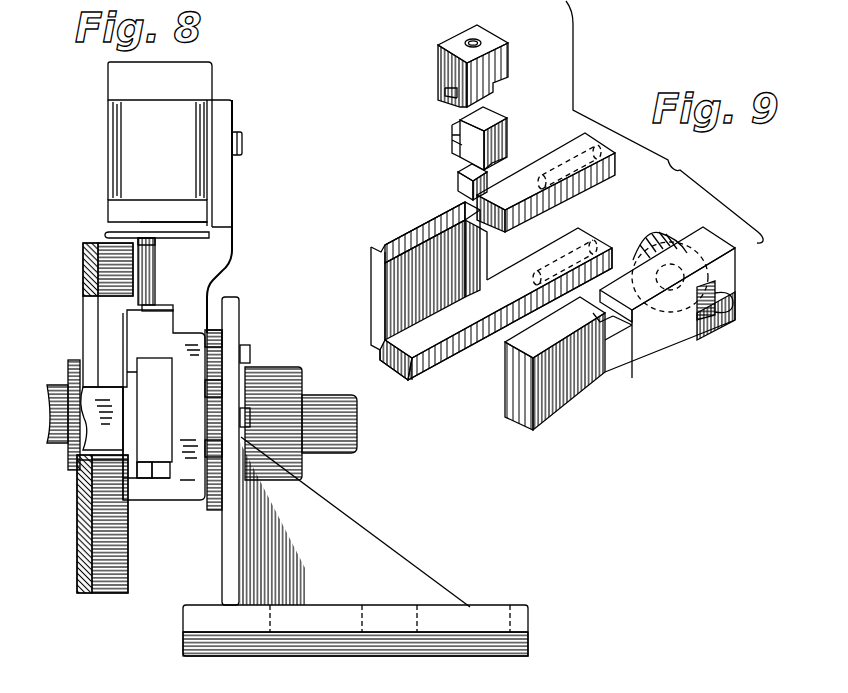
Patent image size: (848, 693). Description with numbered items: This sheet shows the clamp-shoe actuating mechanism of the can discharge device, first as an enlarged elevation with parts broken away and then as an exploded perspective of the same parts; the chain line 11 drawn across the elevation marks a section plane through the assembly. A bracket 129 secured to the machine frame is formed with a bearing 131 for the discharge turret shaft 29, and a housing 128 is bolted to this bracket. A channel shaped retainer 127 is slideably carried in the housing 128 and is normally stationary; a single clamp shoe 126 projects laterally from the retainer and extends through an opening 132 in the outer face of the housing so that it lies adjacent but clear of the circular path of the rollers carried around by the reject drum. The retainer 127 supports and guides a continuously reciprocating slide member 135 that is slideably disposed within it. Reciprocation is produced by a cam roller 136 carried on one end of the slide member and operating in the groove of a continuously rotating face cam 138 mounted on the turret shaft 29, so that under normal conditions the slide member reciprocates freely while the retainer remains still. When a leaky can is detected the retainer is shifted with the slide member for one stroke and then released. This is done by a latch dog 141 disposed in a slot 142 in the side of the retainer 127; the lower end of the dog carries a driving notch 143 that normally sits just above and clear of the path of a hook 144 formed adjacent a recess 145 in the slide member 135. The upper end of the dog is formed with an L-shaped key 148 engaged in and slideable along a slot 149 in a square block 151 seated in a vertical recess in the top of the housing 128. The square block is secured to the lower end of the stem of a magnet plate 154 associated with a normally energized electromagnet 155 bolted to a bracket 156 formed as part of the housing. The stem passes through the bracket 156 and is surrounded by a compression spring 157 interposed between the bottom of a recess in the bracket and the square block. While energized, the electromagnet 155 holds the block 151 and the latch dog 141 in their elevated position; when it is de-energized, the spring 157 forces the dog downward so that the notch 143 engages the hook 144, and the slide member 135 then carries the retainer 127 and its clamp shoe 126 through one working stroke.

In FIG. 8, the section line 11- 11 is at (157, 228).
In FIG. 8, the electromagnet 155 is at (175, 144).
In FIG. 8, the magnet plate 154 is at (108, 235).
In FIG. 8, the bracket 156 is at (222, 256).
In FIG. 8, the compression spring 157 is at (157, 304).
In FIG. 8, the slide member 135 is at (160, 394).
In FIG. 9, the slide member 135 is at (578, 398).
In FIG. 8, the channel shaped retainer 127 is at (163, 466).
In FIG. 9, the channel shaped retainer 127 is at (458, 345).
In FIG. 8, the housing 128 is at (155, 490).
In FIG. 8, the face cam 138 is at (115, 590).
In FIG. 8, the clamp shoe 126 is at (90, 356).
In FIG. 9, the clamp shoe 126 is at (468, 183).
In FIG. 8, the opening 132 is at (116, 467).
In FIG. 8, the bracket 129 is at (368, 554).
In FIG. 8, the bearing 131 is at (290, 368).
In FIG. 8, the discharge turret shaft 29 is at (347, 435).
In FIG. 9, the square block 151 is at (497, 67).
In FIG. 9, the slot 149 is at (445, 93).
In FIG. 9, the latch dog 141 is at (498, 137).
In FIG. 9, the L-shaped key 148 is at (458, 126).
In FIG. 9, the driving notch 143 is at (496, 161).
In FIG. 9, the slot 142 is at (456, 217).
In FIG. 9, the hook 144 is at (590, 334).
In FIG. 9, the recess 145 is at (620, 327).
In FIG. 9, the cam roller 136 is at (659, 233).